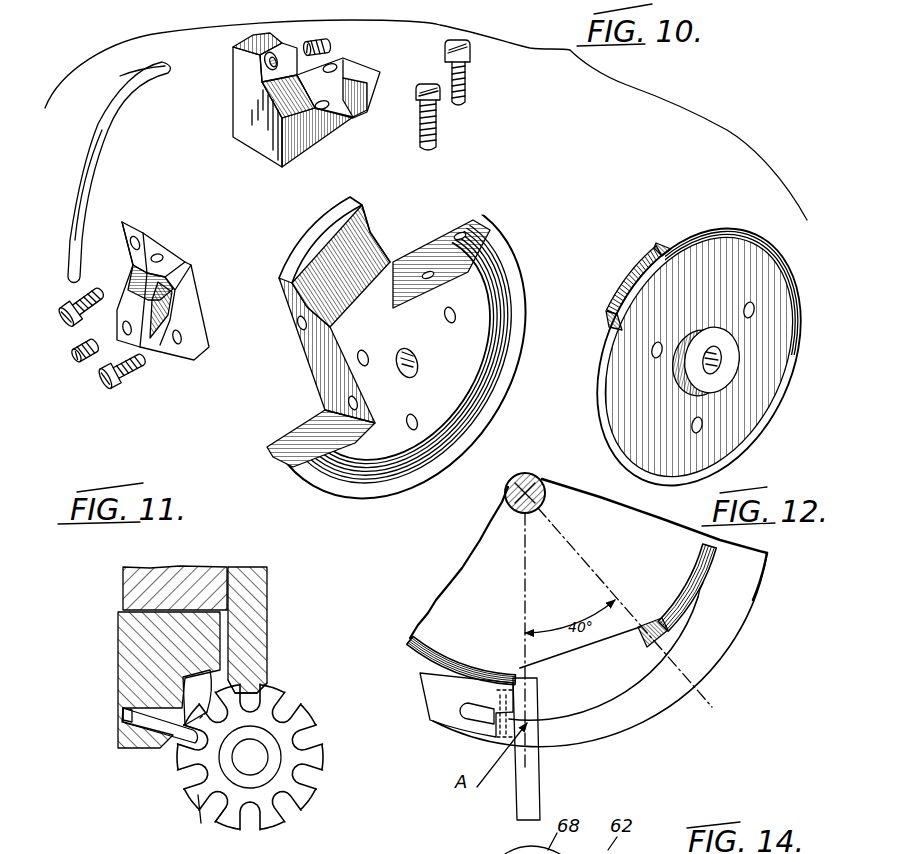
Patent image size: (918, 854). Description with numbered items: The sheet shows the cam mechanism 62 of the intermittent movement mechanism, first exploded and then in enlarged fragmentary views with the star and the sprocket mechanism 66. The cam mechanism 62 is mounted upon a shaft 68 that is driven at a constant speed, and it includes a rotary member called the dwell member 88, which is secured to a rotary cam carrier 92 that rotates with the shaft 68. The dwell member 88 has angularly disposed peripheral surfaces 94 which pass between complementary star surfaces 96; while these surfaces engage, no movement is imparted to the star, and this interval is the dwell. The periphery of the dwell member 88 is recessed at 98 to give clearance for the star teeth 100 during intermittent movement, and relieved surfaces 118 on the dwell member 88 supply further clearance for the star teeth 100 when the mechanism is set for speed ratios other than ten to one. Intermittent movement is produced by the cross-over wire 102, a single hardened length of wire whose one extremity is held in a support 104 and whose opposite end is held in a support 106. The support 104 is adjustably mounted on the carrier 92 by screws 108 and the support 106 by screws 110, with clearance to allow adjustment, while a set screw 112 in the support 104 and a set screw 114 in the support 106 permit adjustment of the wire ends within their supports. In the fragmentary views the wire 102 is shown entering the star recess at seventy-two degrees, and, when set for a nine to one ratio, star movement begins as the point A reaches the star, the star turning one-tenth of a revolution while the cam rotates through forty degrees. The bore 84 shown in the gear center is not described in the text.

In FIG. 11, the cam mechanism 62 is at (279, 617).
In FIG. 12, the cam mechanism 62 is at (459, 568).
In FIG. 11, the sprocket mechanism 66 is at (314, 731).
In FIG. 12, the sprocket mechanism 66 is at (548, 767).
In FIG. 11, the shaft 68 is at (148, 853).
In FIG. 12, the shaft 68 is at (542, 477).
In FIG. 11, the gear shaft bore 84 is at (257, 763).
In FIG. 10, the dwell member 88 is at (690, 352).
In FIG. 11, the dwell member 88 is at (270, 655).
In FIG. 12, the dwell member 88 is at (703, 590).
In FIG. 10, the rotary cam carrier 92 is at (303, 398).
In FIG. 11, the rotary cam carrier 92 is at (137, 588).
In FIG. 10, the peripheral surfaces 94 is at (725, 229).
In FIG. 11, the peripheral surfaces 94 is at (273, 687).
In FIG. 11, the star surfaces 96 is at (192, 775).
In FIG. 10, the recess 98 is at (638, 278).
In FIG. 12, the recess 98 is at (590, 650).
In FIG. 11, the star teeth 100 is at (230, 815).
In FIG. 10, the cross-over wire 102 is at (97, 160).
In FIG. 11, the cross-over wire 102 is at (133, 720).
In FIG. 12, the cross-over wire 102 is at (633, 693).
In FIG. 10, the support 104 is at (250, 138).
In FIG. 11, the support 104 is at (127, 669).
In FIG. 12, the support 104 is at (433, 716).
In FIG. 10, the support 106 is at (255, 254).
In FIG. 10, the screws 108 is at (438, 128).
In FIG. 10, the screws 110 is at (64, 303).
In FIG. 10, the set screw 112 is at (333, 47).
In FIG. 10, the set screw 114 is at (75, 353).
In FIG. 10, the relieved surfaces 118 is at (662, 253).
In FIG. 12, the relieved surfaces 118 is at (664, 626).